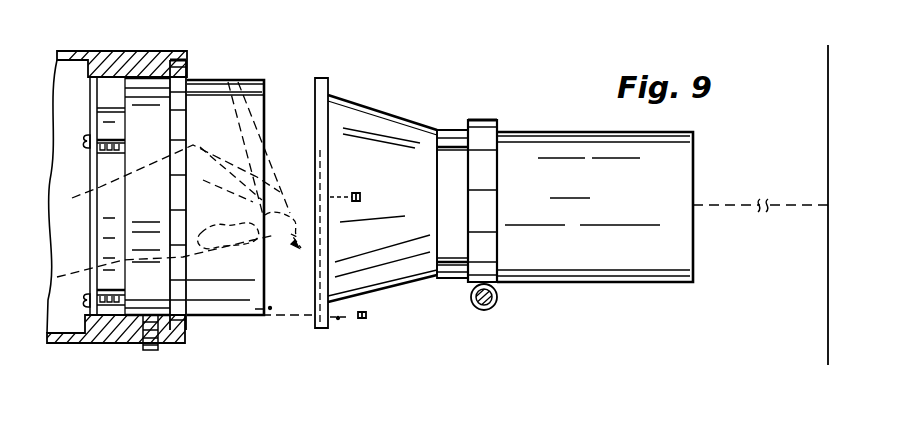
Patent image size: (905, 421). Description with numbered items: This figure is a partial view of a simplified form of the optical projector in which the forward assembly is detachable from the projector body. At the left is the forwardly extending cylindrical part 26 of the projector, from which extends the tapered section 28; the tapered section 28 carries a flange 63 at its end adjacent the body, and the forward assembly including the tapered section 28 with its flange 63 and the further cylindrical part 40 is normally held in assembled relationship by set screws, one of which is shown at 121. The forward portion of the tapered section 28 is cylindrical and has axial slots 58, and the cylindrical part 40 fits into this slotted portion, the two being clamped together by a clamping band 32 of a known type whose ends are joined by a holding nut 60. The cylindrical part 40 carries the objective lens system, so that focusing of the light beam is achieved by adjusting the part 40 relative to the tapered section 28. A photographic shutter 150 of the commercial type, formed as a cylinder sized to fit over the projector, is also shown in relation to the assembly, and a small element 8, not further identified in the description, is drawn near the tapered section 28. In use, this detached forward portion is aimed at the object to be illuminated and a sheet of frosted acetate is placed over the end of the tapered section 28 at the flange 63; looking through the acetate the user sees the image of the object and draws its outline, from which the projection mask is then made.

The cylindrical part 26 is at (142, 53).
The photographic shutter 150 is at (90, 197).
The stop element 8 is at (345, 197).
The flange 63 is at (302, 345).
The tapered section 28 is at (380, 111).
The axial slots 58 is at (455, 148).
The clamping band 32 is at (487, 193).
The cylindrical part 40 is at (557, 135).
The holding nut 60 is at (498, 297).
The set screw 121 is at (364, 322).